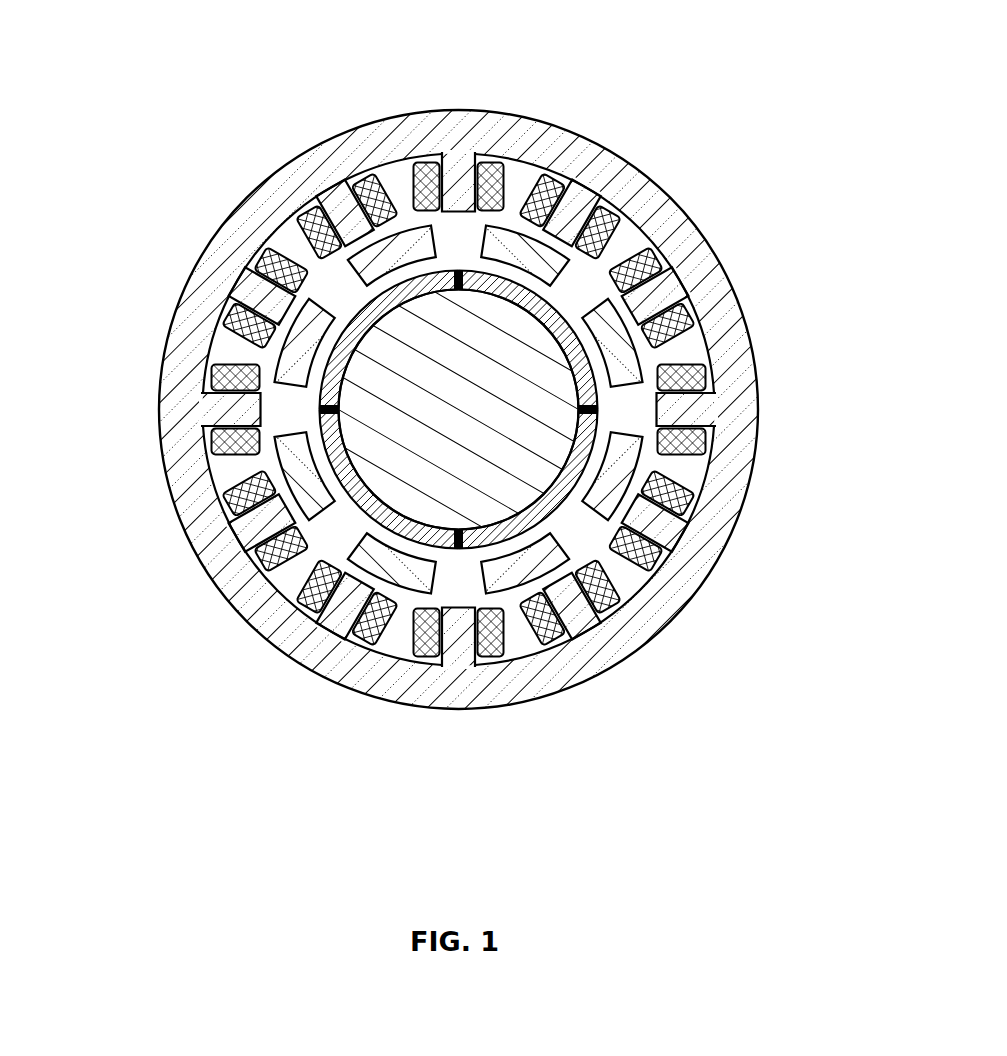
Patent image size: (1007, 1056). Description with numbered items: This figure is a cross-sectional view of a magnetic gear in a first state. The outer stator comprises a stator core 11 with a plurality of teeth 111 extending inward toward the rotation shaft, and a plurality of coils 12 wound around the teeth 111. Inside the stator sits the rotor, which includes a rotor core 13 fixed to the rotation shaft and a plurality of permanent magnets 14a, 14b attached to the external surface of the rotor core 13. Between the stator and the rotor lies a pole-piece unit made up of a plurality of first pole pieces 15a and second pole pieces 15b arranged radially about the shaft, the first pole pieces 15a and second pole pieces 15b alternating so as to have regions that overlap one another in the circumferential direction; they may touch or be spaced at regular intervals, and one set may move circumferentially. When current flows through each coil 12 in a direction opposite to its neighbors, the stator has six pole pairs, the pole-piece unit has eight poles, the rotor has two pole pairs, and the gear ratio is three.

The stator core 11 is at (585, 140).
The teeth 111 is at (457, 180).
The coils 12 is at (665, 258).
The rotor core 13 is at (393, 473).
The permanent magnets 14a is at (360, 312).
The permanent magnets 14b is at (560, 303).
The first pole pieces 15a is at (377, 265).
The second pole pieces 15b is at (498, 253).